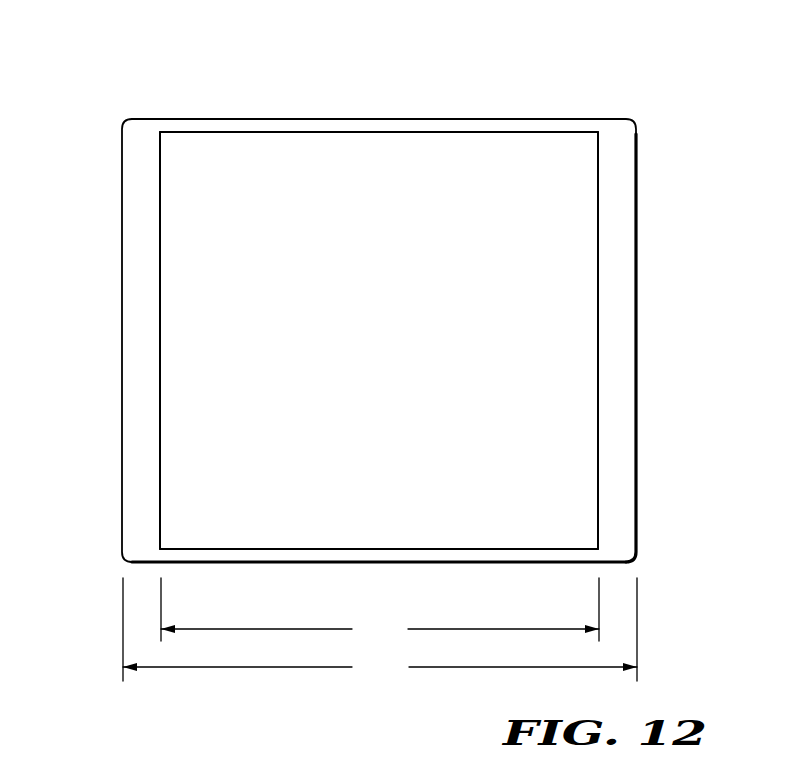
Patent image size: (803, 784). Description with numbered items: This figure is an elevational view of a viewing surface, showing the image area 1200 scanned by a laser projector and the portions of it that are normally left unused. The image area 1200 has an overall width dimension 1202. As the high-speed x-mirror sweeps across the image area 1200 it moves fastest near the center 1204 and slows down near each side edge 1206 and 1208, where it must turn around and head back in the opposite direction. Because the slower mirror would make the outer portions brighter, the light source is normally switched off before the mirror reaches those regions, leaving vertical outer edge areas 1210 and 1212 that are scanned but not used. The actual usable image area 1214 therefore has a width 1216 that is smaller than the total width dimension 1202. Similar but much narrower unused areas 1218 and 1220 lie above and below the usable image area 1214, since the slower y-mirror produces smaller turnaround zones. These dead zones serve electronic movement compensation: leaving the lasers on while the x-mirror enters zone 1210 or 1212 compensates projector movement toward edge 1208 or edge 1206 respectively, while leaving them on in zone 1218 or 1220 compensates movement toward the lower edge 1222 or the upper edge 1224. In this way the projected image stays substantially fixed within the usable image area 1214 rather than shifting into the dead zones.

The image area 1200 is at (379, 320).
The width dimension 1202 is at (380, 629).
The center 1204 is at (380, 314).
The edge 1206 is at (122, 368).
The edge 1208 is at (637, 365).
The vertical outer edge area 1210 is at (135, 232).
The vertical outer edge area 1212 is at (622, 232).
The usable image area 1214 is at (377, 148).
The width 1216 is at (380, 609).
The unused area 1218 is at (243, 120).
The unused area 1220 is at (480, 549).
The lower edge 1222 is at (271, 563).
The upper edge 1224 is at (500, 119).